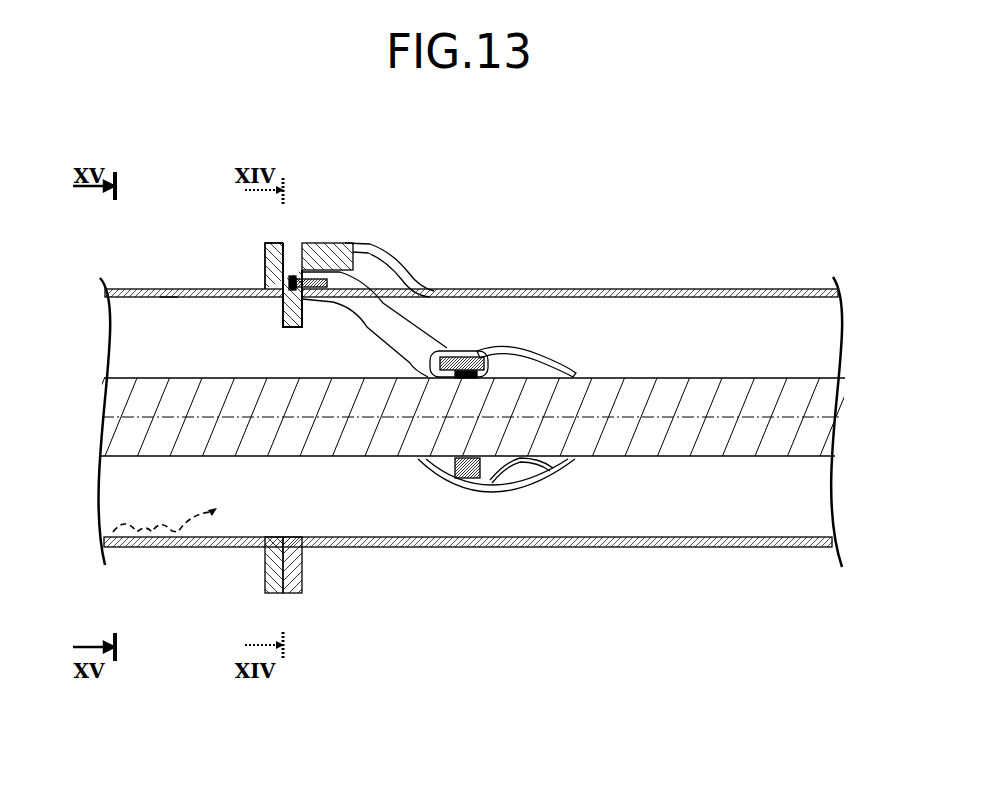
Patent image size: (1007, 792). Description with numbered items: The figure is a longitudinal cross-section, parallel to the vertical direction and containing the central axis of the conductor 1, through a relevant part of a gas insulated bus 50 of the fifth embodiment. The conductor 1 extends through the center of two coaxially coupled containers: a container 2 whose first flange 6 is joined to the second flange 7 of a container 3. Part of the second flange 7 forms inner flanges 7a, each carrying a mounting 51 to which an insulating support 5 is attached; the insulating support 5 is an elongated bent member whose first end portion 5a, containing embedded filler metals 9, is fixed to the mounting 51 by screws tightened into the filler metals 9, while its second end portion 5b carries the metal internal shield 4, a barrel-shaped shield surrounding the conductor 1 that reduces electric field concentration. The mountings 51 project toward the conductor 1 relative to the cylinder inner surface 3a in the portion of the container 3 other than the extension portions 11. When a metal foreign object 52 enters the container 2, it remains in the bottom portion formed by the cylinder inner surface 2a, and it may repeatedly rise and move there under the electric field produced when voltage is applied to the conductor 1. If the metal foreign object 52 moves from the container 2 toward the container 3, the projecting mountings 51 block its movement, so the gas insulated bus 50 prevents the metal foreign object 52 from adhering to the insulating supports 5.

The conductor 1 is at (793, 395).
The container 2 is at (138, 295).
The cylinder inner surface 2a is at (167, 293).
The container 3 is at (755, 290).
The cylinder inner surface 3a is at (683, 540).
The internal shield 4 is at (595, 315).
The insulating support 5 is at (447, 348).
The first end portion 5a is at (318, 294).
The second end portion 5b is at (545, 353).
The first flange 6 is at (275, 563).
The second flange 7 is at (300, 562).
The inner flange 7a is at (328, 261).
The filler metal 9 is at (400, 327).
The extension portion 11 is at (382, 256).
The gas insulated bus 50 is at (648, 160).
The mounting 51 is at (287, 318).
The metal foreign object 52 is at (215, 514).